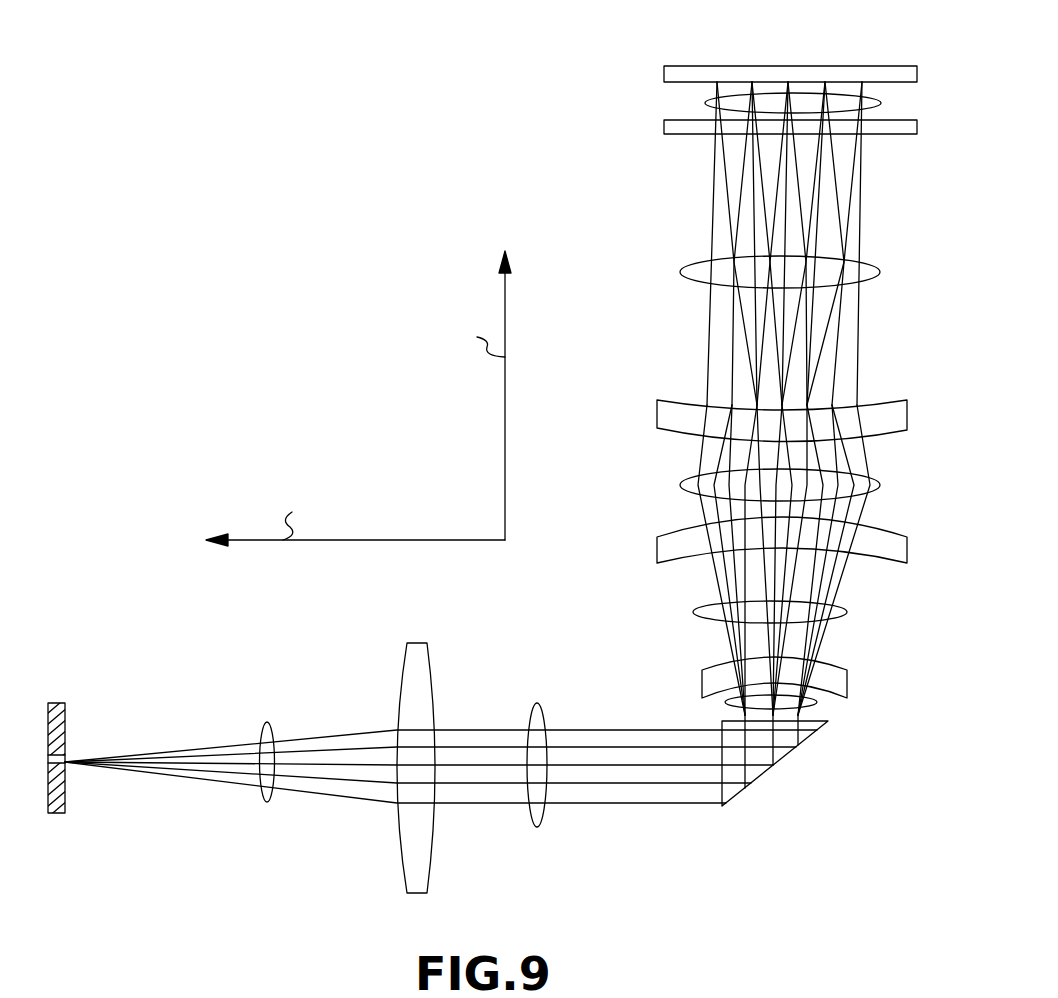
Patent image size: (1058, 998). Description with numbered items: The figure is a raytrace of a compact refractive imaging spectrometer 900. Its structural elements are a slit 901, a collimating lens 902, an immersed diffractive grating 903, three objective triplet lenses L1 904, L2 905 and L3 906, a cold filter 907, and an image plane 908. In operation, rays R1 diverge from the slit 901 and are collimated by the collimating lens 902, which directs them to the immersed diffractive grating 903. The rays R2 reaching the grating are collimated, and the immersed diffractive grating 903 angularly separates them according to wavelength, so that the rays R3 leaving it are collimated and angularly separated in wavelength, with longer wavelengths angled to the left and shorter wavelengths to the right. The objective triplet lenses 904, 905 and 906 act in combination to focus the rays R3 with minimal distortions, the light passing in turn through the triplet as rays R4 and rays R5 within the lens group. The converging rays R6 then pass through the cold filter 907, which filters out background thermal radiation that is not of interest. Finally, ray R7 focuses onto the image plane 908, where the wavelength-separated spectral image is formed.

The compact imaging spectrometer 900 is at (437, 138).
The slit 901 is at (70, 703).
The collimating lens 902 is at (397, 843).
The immersed diffractive grating 903 is at (790, 757).
The objective triplet lens L1 904 is at (702, 685).
The objective triplet lens L2 905 is at (657, 548).
The objective triplet lens L3 906 is at (657, 420).
The cold filter 907 is at (682, 135).
The image plane 908 is at (816, 66).
The rays R1 is at (266, 722).
The rays R2 is at (540, 827).
The rays R3 is at (818, 703).
The rays R4 is at (695, 613).
The rays R5 is at (682, 484).
The rays R6 is at (688, 278).
The ray R7 is at (705, 103).